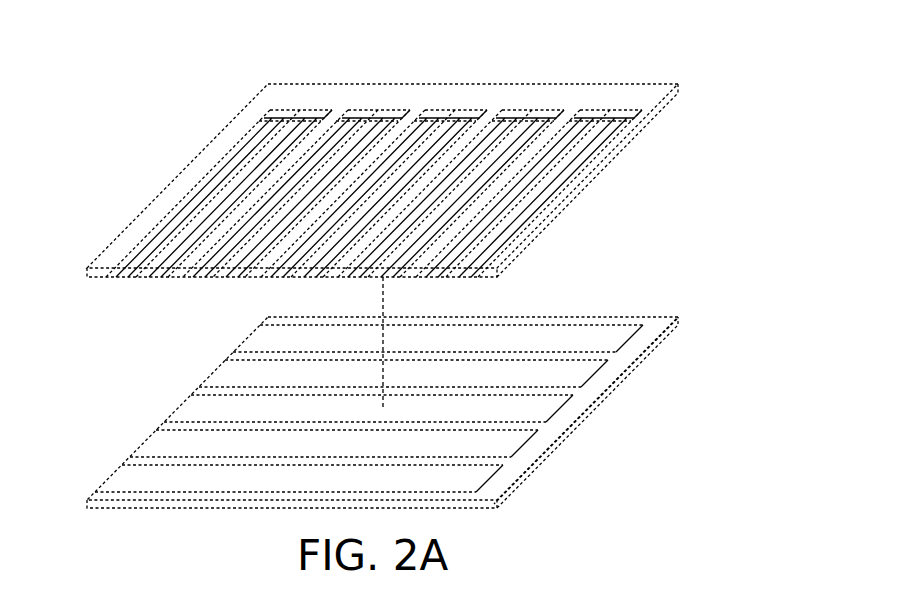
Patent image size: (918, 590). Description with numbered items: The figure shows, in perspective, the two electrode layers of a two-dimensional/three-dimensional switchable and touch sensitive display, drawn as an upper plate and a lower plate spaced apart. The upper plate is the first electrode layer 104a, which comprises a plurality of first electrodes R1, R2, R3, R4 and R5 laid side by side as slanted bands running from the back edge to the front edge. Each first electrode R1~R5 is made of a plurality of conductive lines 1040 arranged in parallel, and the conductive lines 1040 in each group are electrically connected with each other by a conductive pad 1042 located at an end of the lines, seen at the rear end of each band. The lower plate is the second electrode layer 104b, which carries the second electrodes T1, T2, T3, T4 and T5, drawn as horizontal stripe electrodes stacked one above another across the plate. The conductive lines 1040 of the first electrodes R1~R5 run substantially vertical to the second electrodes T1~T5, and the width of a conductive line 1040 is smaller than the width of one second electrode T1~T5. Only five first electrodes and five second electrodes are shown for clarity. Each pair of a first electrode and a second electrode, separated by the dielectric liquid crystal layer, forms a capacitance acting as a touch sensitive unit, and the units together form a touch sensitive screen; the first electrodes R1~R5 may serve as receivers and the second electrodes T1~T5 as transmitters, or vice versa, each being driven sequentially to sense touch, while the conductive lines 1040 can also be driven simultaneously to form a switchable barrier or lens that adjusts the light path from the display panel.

The first electrode layer 104a is at (657, 53).
The second electrode layer 104b is at (658, 284).
The conductive lines 1040 is at (207, 178).
The conductive pad 1042 is at (273, 110).
The first electrode R1 is at (302, 106).
The first electrode R2 is at (380, 106).
The first electrode R3 is at (457, 106).
The first electrode R4 is at (535, 106).
The first electrode R5 is at (612, 106).
The second electrode T1 is at (612, 342).
The second electrode T2 is at (577, 377).
The second electrode T3 is at (542, 412).
The second electrode T4 is at (507, 447).
The second electrode T5 is at (473, 480).